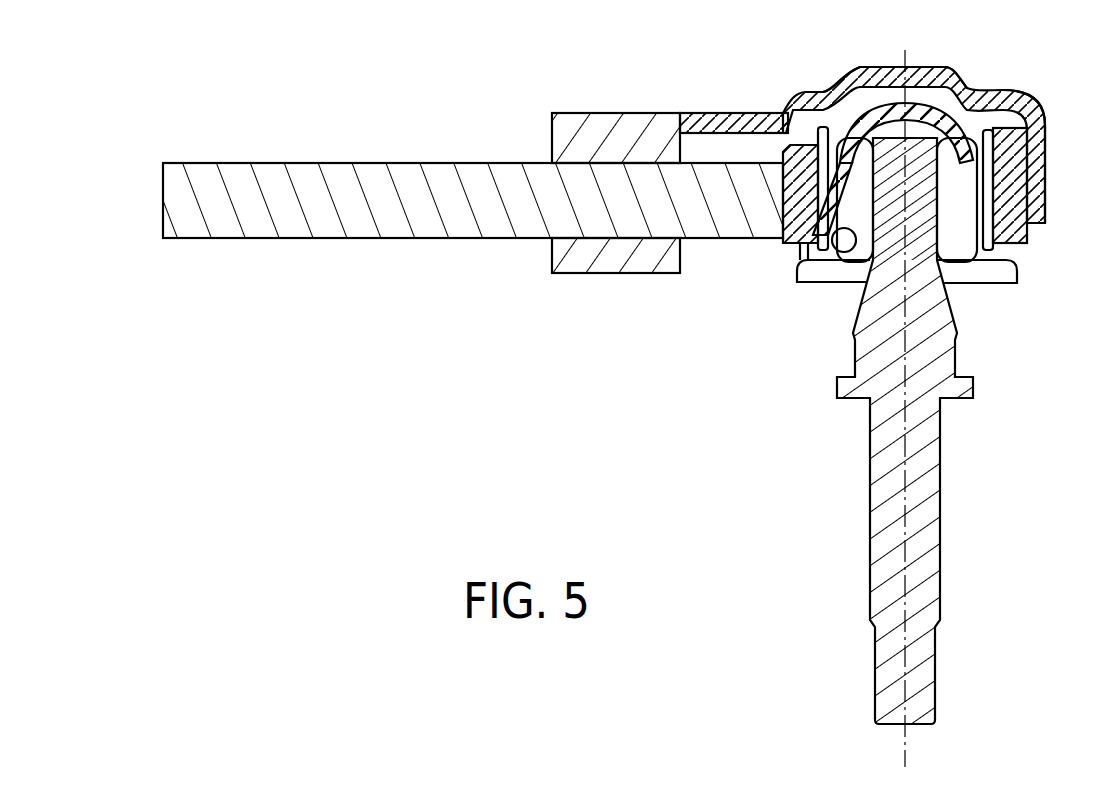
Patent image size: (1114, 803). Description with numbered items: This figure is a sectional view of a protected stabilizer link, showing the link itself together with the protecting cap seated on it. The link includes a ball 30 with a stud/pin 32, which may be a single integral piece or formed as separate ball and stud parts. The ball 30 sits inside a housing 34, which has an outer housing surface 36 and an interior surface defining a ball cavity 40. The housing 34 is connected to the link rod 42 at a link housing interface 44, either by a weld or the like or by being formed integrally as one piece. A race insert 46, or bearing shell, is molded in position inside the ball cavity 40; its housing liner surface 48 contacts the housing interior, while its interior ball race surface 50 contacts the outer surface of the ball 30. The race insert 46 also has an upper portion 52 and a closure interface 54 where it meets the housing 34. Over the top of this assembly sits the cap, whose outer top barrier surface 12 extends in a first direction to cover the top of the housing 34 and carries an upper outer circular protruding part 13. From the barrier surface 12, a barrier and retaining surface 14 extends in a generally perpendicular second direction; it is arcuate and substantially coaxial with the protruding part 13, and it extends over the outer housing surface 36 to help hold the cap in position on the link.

The outer top barrier surface 12 is at (1005, 92).
The upper outer circular protruding part 13 is at (884, 67).
The barrier and retaining surface 14 is at (1047, 204).
The ball 30 is at (960, 198).
The stud/pin 32 is at (877, 483).
The housing 34 is at (812, 262).
The outer housing surface 36 is at (1030, 232).
The ball cavity 40 is at (1040, 120).
The link rod 42 is at (365, 235).
The link housing interface 44 is at (775, 243).
The race insert 46 is at (821, 137).
The housing liner surface 48 is at (1007, 250).
The interior ball race surface 50 is at (852, 266).
The upper portion 52 is at (925, 117).
The closure interface 54 is at (800, 127).